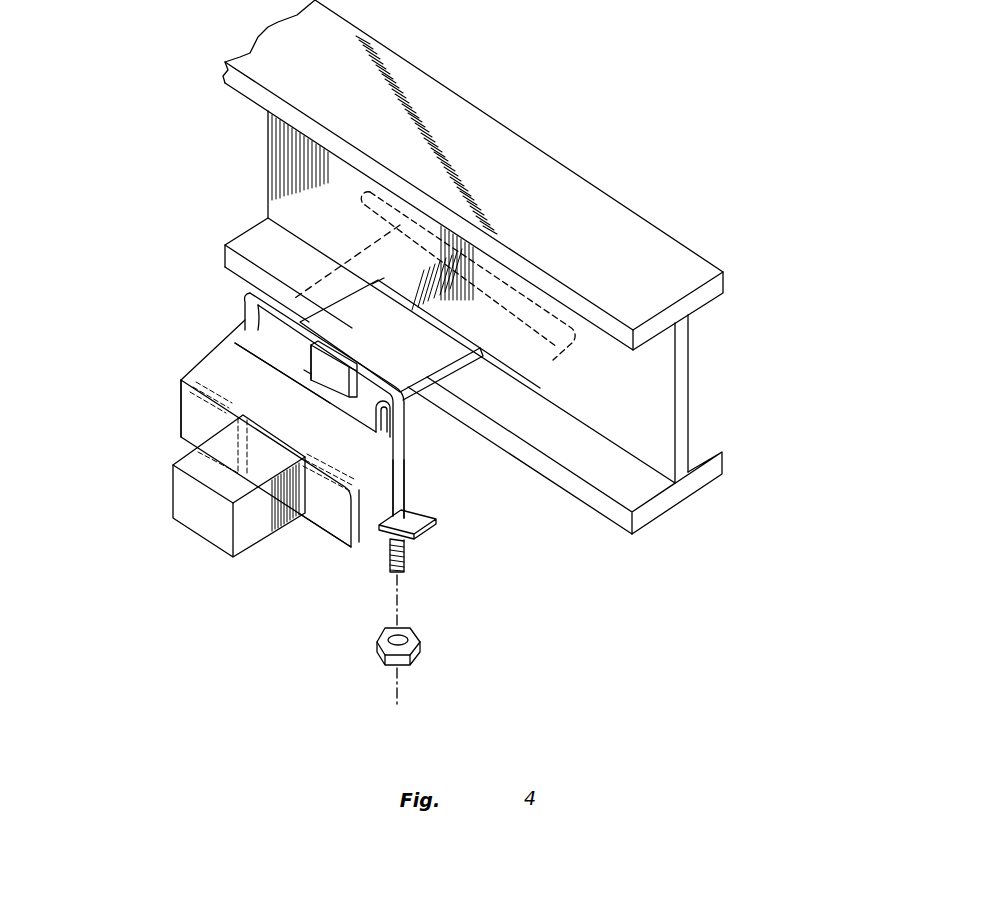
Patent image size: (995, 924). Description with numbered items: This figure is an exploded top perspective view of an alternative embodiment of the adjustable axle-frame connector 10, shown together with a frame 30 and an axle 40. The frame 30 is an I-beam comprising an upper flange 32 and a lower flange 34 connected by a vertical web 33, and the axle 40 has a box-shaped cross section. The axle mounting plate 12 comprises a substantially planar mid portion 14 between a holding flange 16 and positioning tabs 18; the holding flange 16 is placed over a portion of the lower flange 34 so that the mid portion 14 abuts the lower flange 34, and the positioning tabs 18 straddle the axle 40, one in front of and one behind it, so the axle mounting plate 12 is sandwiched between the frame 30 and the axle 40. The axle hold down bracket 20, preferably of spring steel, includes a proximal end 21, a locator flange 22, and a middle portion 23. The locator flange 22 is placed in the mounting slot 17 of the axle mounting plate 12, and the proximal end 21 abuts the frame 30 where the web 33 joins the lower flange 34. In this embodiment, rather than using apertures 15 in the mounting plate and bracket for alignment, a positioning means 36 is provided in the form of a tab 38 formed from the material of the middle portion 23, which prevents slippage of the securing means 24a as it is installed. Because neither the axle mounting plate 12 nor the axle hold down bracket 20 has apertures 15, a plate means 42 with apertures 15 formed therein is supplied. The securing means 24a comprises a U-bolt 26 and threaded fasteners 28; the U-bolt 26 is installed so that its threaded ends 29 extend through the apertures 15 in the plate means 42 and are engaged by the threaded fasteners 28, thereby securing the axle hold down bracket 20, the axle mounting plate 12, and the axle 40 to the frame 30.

The adjustable axle-frame connector 10 is at (165, 268).
The axle mounting plate 12 is at (229, 475).
The substantially planar mid portion 14 is at (432, 410).
The apertures 15 is at (393, 531).
The holding flange 16 is at (510, 290).
The mounting slot 17 is at (357, 423).
The positioning tabs 18 is at (335, 525).
The axle hold down bracket 20 is at (437, 285).
The proximal end 21 is at (480, 347).
The locator flange 22 is at (306, 373).
The middle portion 23 is at (386, 300).
The securing means 24a is at (428, 468).
The U-bolt 26 is at (400, 479).
The threaded fasteners 28 is at (416, 653).
The threaded ends 29 is at (405, 548).
The frame 30 is at (767, 342).
The upper flange 32 is at (712, 292).
The vertical web 33 is at (682, 398).
The lower flange 34 is at (715, 467).
The positioning means 36 is at (296, 355).
The tab 38 is at (313, 367).
The axle 40 is at (198, 548).
The plate means 42 is at (417, 518).